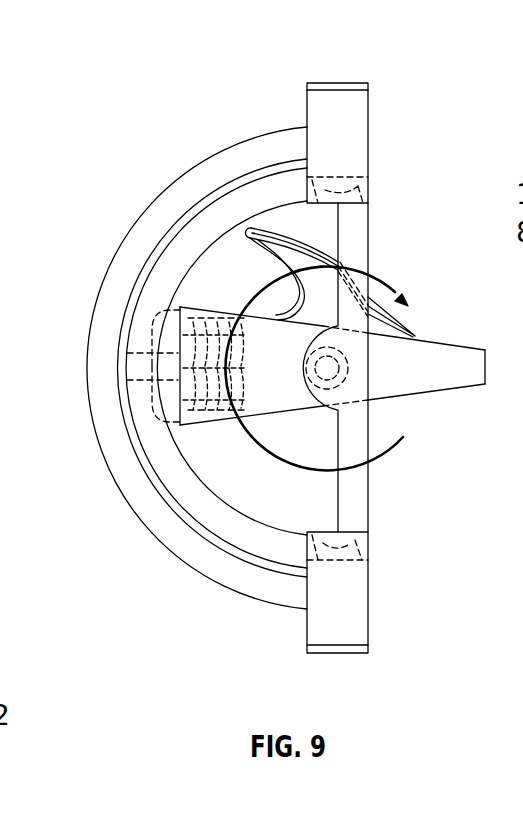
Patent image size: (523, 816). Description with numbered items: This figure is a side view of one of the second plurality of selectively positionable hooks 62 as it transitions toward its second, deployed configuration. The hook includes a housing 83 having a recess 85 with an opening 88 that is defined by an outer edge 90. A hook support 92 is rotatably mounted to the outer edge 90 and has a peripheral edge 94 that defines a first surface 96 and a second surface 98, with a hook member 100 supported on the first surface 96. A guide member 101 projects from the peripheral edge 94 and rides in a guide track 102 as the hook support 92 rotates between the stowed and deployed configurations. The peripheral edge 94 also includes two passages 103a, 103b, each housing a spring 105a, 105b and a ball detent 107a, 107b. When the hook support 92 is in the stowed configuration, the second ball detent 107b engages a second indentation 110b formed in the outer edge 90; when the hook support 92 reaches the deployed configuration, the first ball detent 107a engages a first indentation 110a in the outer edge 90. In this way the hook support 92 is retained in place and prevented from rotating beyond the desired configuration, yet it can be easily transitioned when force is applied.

The second plurality of selectively positionable hooks 62 is at (414, 696).
The housing 83 is at (338, 83).
The recess 85 is at (203, 511).
The opening 88 is at (361, 214).
The outer edge 90 is at (356, 545).
The hook support 92 is at (442, 333).
The peripheral edge 94 is at (487, 369).
The first surface 96 is at (486, 348).
The second surface 98 is at (458, 389).
The hook member 100 is at (249, 231).
The guide member 101 is at (160, 372).
The guide track 102 is at (167, 547).
The first passage 103a is at (155, 398).
The second passage 103b is at (202, 450).
The first spring 105a is at (207, 320).
The second spring 105b is at (222, 430).
The first ball detent 107a is at (157, 333).
The second ball detent 107b is at (168, 408).
The first indentation 110a is at (352, 197).
The second indentation 110b is at (355, 548).